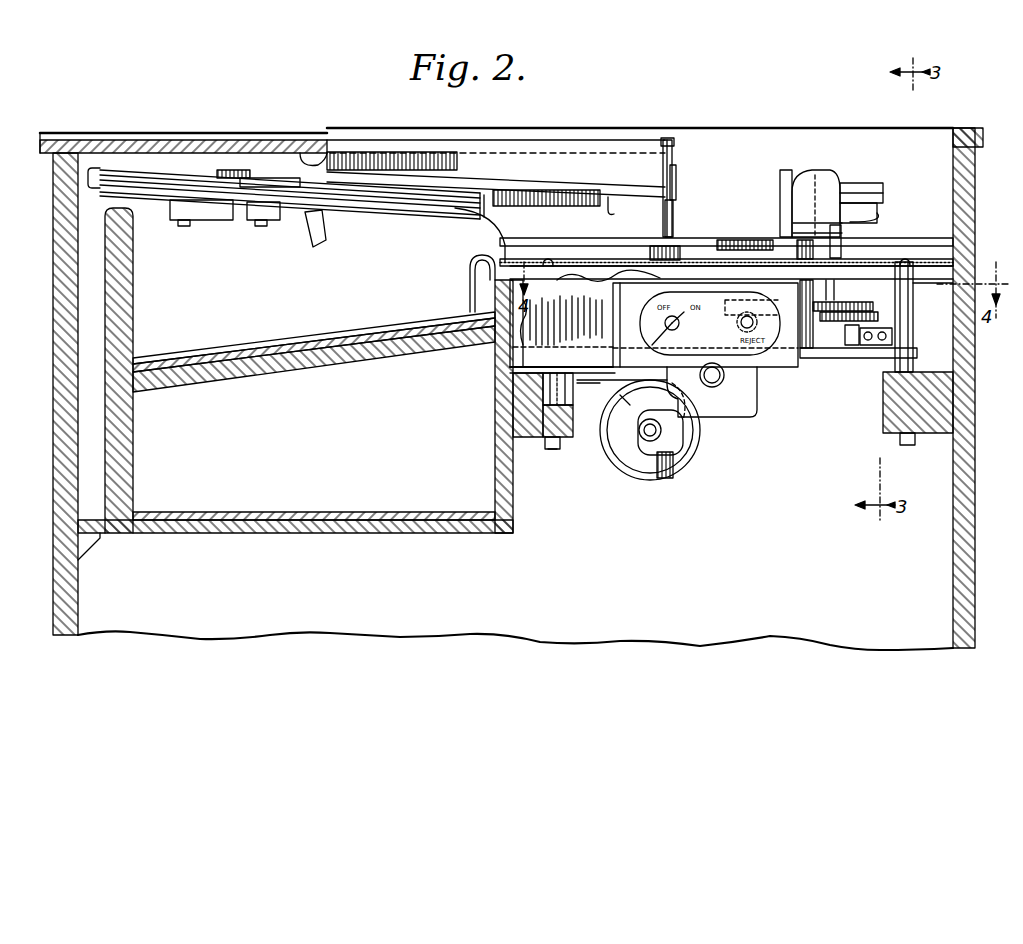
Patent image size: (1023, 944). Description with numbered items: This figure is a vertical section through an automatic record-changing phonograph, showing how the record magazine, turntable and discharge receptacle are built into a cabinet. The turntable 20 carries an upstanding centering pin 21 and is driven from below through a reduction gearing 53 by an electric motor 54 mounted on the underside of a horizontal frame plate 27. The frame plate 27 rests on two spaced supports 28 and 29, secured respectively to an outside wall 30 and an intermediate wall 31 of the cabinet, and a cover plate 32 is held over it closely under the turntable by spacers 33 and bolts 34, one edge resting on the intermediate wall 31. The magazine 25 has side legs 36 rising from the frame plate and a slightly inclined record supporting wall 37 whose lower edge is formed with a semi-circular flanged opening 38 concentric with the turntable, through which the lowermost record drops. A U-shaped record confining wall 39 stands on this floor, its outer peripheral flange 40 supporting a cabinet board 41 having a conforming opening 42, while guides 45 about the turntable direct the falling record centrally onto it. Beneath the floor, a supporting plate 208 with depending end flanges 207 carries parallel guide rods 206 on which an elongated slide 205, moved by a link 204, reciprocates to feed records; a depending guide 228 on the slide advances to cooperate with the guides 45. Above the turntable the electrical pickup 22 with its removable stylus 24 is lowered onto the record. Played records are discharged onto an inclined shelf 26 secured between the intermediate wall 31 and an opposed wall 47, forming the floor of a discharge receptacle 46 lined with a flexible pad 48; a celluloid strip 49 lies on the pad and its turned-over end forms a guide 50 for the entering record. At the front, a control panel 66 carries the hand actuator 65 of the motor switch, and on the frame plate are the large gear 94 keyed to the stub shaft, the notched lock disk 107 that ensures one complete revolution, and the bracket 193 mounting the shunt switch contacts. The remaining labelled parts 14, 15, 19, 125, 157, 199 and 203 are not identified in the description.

The chute wall 14 is at (676, 190).
The chute lower wall 15 is at (673, 210).
The chute cap 19 is at (675, 150).
The turntable 20 is at (712, 240).
The centering pin 21 is at (675, 238).
The electrical pickup 22 is at (828, 183).
The stylus 24 is at (815, 243).
The magazine 25 is at (577, 160).
The shelf 26 is at (290, 368).
The frame plate 27 is at (838, 360).
The support 28 is at (935, 434).
The support 29 is at (537, 440).
The outside wall 30 is at (975, 482).
The intermediate wall 31 is at (513, 492).
The cover plate 32 is at (932, 258).
The spacers 33 is at (920, 323).
The bolts 34 is at (546, 261).
The side legs 36 is at (500, 230).
The record supporting wall 37 is at (250, 177).
The semi-circular flanged opening 38 is at (619, 215).
The record confining wall 39 is at (645, 158).
The outer peripheral flange 40 is at (318, 162).
The board 41 is at (240, 168).
The opening 42 is at (350, 150).
The guides 45 is at (842, 250).
The discharge receptacle 46 is at (183, 210).
The opposed wall 47 is at (133, 444).
The flexible pad 48 is at (135, 312).
The celluloid strip 49 is at (260, 350).
The guide 50 is at (470, 275).
The reduction gearing 53 is at (683, 437).
The electric motor 54 is at (627, 456).
The hand actuator 65 is at (679, 326).
The control panel 66 is at (758, 400).
The large gear 94 is at (862, 318).
The lock disk 107 is at (860, 299).
The motor housing 125 is at (780, 190).
The lead 157 is at (852, 223).
The bracket 193 is at (880, 347).
The reject button 199 is at (741, 325).
The block 203 is at (207, 221).
The link 204 is at (240, 221).
The slide 205 is at (148, 200).
The guide rods 206 is at (135, 176).
The end flanges 207 is at (90, 184).
The supporting plate 208 is at (188, 178).
The depending guide 228 is at (327, 237).